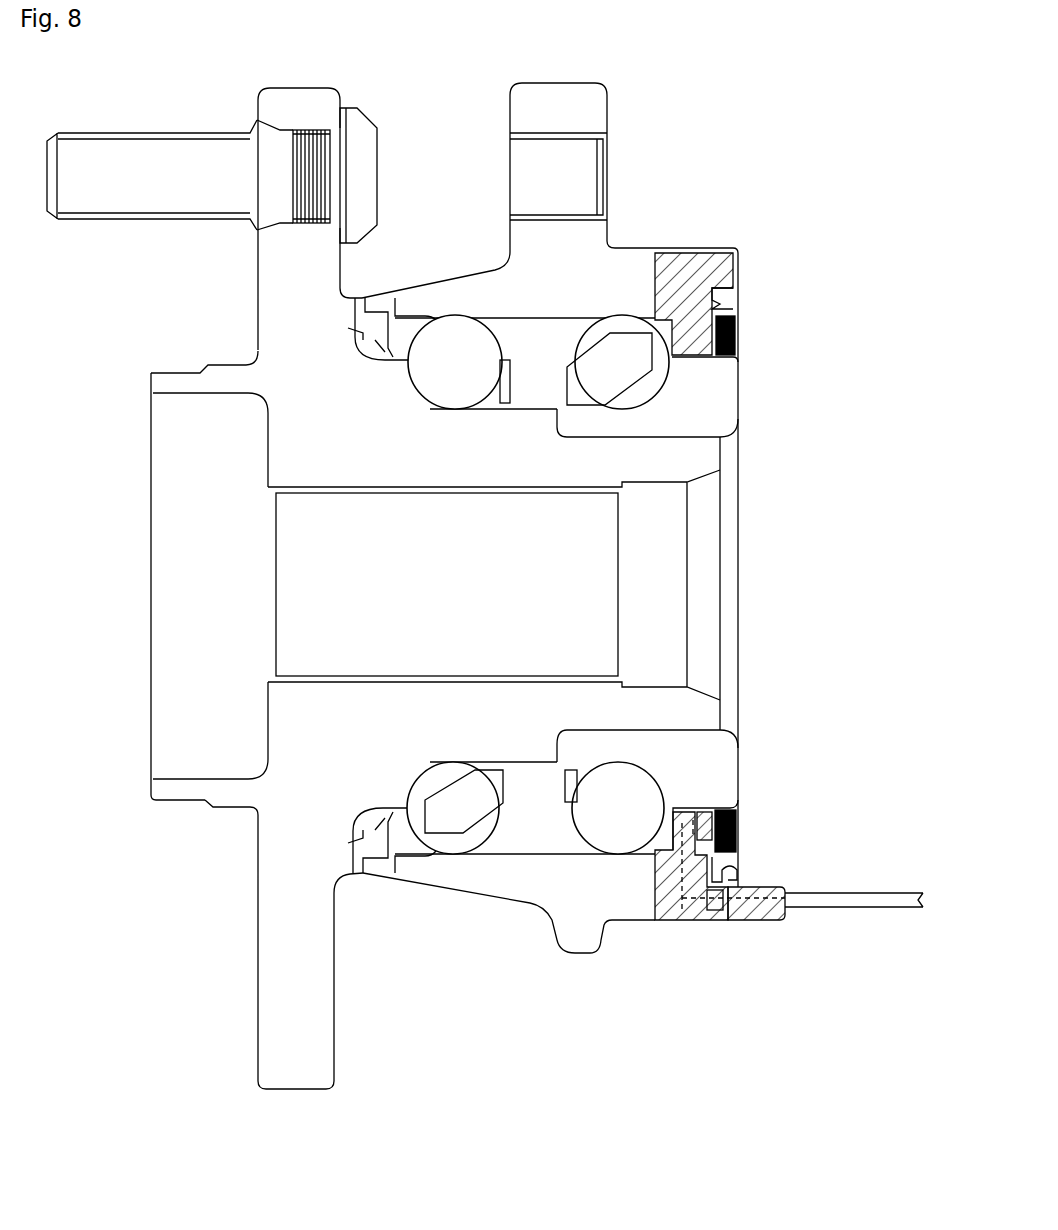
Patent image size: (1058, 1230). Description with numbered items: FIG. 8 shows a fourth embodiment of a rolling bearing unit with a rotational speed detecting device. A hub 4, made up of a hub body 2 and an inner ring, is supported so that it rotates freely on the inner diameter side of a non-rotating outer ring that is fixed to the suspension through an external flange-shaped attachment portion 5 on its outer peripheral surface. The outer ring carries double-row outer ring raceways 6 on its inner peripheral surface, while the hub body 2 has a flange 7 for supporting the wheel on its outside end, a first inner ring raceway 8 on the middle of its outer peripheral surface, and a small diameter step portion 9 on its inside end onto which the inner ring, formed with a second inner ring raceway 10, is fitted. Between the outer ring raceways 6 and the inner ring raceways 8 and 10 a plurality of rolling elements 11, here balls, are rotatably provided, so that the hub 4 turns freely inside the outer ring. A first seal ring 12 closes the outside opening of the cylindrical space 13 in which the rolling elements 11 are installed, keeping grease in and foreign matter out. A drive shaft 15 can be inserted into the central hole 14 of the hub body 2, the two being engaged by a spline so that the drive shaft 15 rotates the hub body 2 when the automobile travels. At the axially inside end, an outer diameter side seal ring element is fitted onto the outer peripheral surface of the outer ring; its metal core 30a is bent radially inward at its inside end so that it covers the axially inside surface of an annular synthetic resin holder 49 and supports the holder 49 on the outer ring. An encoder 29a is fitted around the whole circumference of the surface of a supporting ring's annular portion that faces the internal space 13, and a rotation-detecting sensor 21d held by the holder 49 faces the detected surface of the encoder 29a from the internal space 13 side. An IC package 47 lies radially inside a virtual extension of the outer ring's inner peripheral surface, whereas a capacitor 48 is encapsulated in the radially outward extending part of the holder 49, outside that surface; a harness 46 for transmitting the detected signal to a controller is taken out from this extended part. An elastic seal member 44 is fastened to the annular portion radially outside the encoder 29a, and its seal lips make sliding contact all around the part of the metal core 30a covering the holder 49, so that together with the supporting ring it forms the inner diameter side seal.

The hub body 2 is at (302, 446).
The hub 4 is at (178, 342).
The attachment portion 5 is at (527, 105).
The outer ring raceways 6 is at (606, 852).
The flange 7 is at (287, 243).
The first inner ring raceway 8 is at (437, 405).
The small diameter step portion 9 is at (657, 730).
The second inner ring raceway 10 is at (662, 790).
The rolling elements 11 is at (458, 340).
The first seal ring 12 is at (358, 335).
The cylindrical space 13 is at (540, 392).
The central hole 14 is at (374, 493).
The drive shaft 15 is at (300, 688).
The rotation-detecting sensor 21d is at (741, 907).
The encoder 29a is at (733, 826).
The metal core 30a is at (666, 921).
The seal member 44 is at (740, 870).
The harness 46 is at (820, 898).
The IC package 47 is at (704, 812).
The capacitor 48 is at (706, 902).
The holder 49 is at (695, 907).